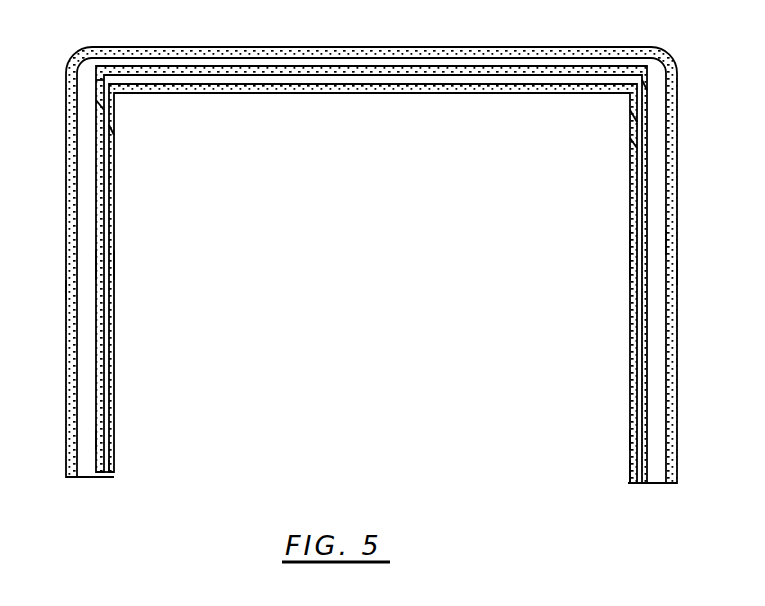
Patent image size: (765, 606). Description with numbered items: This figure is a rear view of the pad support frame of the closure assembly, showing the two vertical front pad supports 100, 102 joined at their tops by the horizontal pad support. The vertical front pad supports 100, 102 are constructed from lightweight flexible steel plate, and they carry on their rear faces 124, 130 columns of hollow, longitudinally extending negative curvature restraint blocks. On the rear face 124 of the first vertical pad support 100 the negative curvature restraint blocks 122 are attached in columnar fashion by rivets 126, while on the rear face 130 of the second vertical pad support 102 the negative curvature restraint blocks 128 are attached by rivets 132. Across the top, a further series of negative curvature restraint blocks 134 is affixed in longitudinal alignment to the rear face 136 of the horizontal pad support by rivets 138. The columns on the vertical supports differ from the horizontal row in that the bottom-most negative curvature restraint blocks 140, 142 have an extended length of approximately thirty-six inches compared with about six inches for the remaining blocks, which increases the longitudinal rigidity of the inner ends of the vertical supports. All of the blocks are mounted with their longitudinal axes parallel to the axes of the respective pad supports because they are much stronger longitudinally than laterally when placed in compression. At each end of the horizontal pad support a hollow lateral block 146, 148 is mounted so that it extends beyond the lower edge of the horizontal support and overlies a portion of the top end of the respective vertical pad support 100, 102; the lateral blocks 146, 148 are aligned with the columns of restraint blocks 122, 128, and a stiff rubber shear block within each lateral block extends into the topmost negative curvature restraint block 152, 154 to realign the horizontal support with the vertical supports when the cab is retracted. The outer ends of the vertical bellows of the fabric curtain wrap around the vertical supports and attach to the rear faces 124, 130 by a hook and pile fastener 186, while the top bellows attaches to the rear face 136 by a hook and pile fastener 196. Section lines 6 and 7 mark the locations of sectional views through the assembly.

The vertical front pad support 100 is at (655, 484).
The vertical front pad support 102 is at (84, 478).
The negative curvature restraint blocks 122 is at (658, 242).
The rear face 124 is at (655, 273).
The rivets 126 is at (645, 238).
The negative curvature restraint blocks 128 is at (97, 267).
The rear face 130 is at (80, 291).
The rivets 132 is at (106, 255).
The negative curvature restraint blocks 134 is at (190, 64).
The rear face 136 is at (260, 62).
The rivets 138 is at (193, 68).
The bottom-most negative curvature restraint block 140 is at (632, 440).
The bottom-most negative curvature restraint block 142 is at (106, 442).
The lateral block 146 is at (650, 85).
The lateral block 148 is at (101, 88).
The topmost negative curvature restraint block 152 is at (631, 117).
The topmost negative curvature restraint block 154 is at (96, 105).
The hook and pile fastener 186 is at (114, 130).
The hook and pile fastener 196 is at (585, 48).
The section line 6- 6 is at (705, 29).
The section line 7- 7 is at (38, 215).